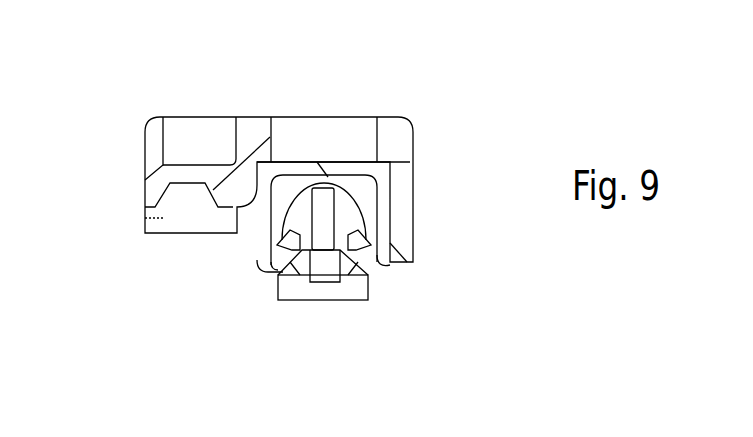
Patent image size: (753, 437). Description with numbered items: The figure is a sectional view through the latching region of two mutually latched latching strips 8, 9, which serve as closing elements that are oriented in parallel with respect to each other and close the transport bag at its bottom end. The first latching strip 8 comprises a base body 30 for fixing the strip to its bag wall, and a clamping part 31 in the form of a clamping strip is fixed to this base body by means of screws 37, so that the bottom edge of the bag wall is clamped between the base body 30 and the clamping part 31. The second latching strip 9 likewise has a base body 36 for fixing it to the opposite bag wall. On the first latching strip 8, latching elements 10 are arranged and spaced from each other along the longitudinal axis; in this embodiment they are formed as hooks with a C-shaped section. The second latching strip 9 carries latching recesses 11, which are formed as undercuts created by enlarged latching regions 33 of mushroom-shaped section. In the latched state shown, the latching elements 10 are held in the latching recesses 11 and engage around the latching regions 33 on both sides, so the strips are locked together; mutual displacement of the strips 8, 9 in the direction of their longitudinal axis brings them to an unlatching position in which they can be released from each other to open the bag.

The first latching strip 8 is at (240, 97).
The base body 30 is at (337, 137).
The enlarged latching region 33 is at (350, 225).
The latching element 10 is at (268, 252).
The base body 36 is at (278, 300).
The screw 37 is at (333, 292).
The second latching strip 9 is at (293, 312).
The clamping part 31 is at (145, 218).
The latching recess 11 is at (292, 232).